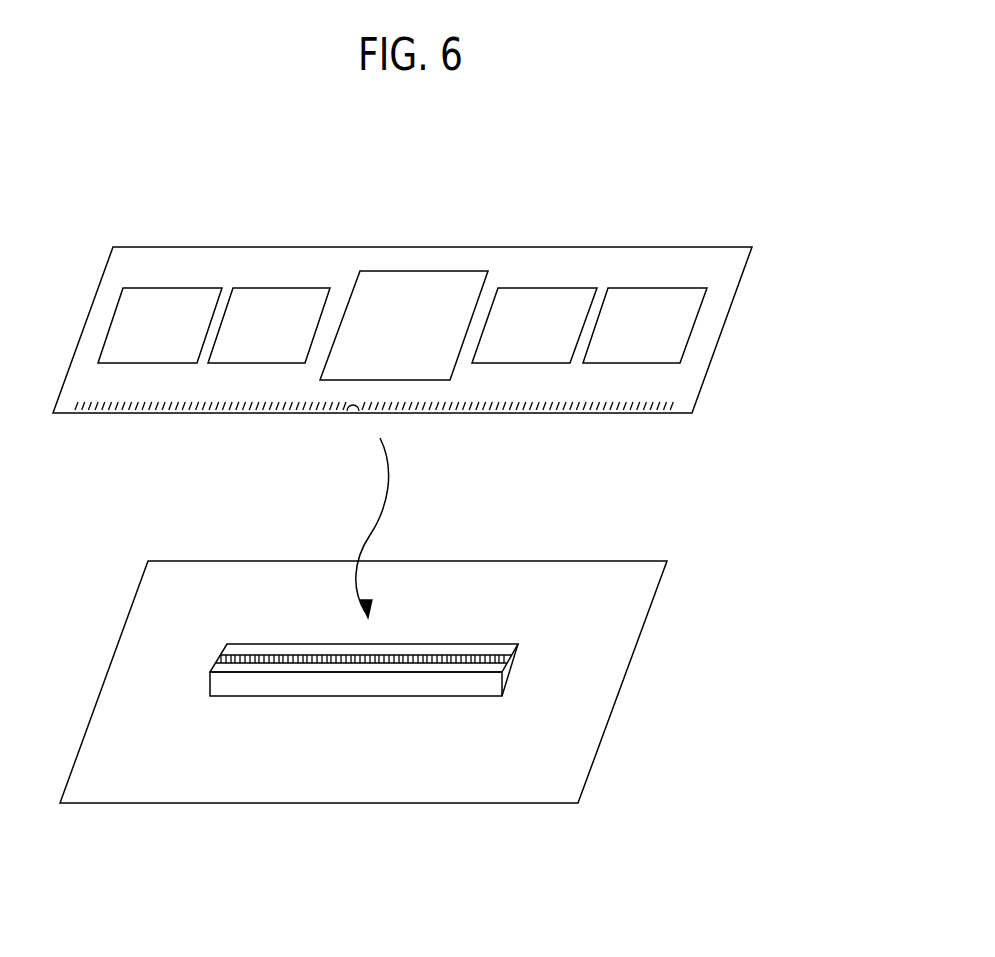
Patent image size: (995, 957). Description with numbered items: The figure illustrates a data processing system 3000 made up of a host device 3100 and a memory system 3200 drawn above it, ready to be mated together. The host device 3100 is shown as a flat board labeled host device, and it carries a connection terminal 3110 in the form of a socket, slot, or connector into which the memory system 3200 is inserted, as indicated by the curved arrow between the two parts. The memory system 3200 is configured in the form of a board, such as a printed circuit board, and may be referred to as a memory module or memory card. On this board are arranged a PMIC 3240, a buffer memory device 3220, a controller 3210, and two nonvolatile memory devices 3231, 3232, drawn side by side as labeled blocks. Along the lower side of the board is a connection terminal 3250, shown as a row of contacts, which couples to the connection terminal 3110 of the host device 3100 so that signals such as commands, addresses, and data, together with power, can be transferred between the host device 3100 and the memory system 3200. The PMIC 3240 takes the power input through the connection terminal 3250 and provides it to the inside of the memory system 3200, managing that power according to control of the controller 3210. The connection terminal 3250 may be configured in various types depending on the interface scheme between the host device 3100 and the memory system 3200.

The data processing system 3000 is at (108, 145).
The memory system 3200 is at (725, 247).
The controller 3210 is at (455, 271).
The buffer memory device 3220 is at (290, 287).
The nonvolatile memory device 3231 is at (552, 288).
The nonvolatile memory device 3232 is at (662, 288).
The power management integrated circuit 3240 is at (115, 313).
The connection terminal 3250 is at (92, 408).
The host device 3100 is at (643, 561).
The connection terminal 3110 is at (541, 640).